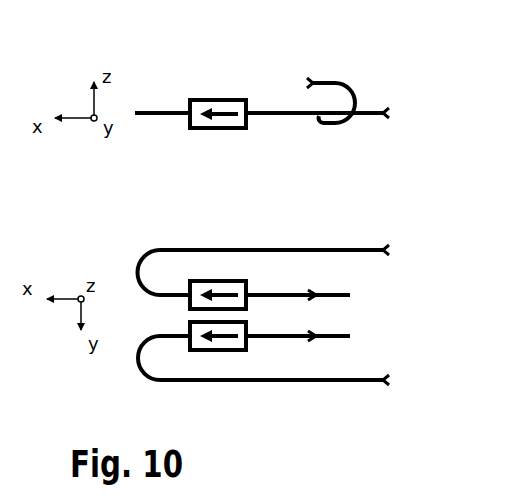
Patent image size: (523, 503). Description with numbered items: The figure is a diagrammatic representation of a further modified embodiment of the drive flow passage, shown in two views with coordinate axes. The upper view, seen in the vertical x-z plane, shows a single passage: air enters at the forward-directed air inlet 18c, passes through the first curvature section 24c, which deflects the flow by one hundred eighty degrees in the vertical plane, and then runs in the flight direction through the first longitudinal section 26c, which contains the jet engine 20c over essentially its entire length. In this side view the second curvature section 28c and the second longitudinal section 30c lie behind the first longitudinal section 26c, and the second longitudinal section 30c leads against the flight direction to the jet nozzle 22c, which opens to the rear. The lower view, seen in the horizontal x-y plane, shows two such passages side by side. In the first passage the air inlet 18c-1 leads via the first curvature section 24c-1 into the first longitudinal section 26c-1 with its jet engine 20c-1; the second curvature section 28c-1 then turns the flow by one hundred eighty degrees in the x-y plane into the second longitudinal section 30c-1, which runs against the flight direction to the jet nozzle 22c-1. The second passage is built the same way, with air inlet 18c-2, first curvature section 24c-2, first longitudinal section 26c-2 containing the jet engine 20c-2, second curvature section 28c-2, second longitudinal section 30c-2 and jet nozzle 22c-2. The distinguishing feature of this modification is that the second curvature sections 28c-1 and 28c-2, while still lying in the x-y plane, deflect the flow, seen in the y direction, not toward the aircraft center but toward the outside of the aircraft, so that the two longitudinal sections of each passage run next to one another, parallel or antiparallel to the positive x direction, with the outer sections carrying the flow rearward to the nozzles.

The air inlet 18c is at (312, 71).
The jet engine 20c is at (218, 103).
The jet nozzle 22c is at (404, 115).
The first curvature section 24c is at (344, 95).
The first longitudinal section 26c is at (315, 127).
The second curvature section 28c is at (162, 103).
The second longitudinal section 30c is at (315, 127).
The air inlet 18c-1 is at (322, 284).
The jet engine 20c-1 is at (218, 284).
The jet nozzle 22c-1 is at (388, 237).
The first curvature section 24c-1 is at (356, 295).
The first longitudinal section 26c-1 is at (282, 283).
The second curvature section 28c-1 is at (141, 267).
The second longitudinal section 30c-1 is at (271, 238).
The air inlet 18c-2 is at (328, 349).
The jet engine 20c-2 is at (218, 350).
The jet nozzle 22c-2 is at (386, 393).
The first curvature section 24c-2 is at (357, 338).
The first longitudinal section 26c-2 is at (282, 349).
The second curvature section 28c-2 is at (141, 367).
The second longitudinal section 30c-2 is at (271, 395).